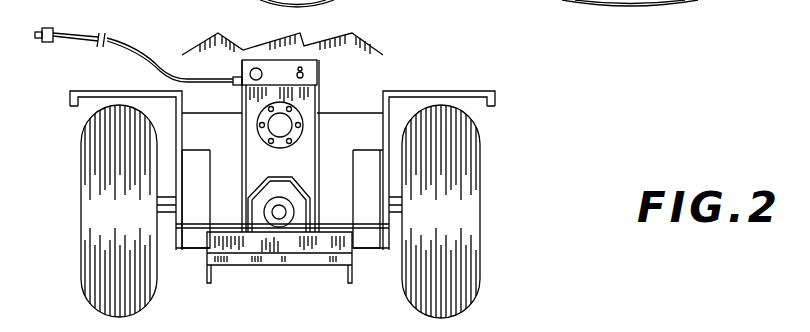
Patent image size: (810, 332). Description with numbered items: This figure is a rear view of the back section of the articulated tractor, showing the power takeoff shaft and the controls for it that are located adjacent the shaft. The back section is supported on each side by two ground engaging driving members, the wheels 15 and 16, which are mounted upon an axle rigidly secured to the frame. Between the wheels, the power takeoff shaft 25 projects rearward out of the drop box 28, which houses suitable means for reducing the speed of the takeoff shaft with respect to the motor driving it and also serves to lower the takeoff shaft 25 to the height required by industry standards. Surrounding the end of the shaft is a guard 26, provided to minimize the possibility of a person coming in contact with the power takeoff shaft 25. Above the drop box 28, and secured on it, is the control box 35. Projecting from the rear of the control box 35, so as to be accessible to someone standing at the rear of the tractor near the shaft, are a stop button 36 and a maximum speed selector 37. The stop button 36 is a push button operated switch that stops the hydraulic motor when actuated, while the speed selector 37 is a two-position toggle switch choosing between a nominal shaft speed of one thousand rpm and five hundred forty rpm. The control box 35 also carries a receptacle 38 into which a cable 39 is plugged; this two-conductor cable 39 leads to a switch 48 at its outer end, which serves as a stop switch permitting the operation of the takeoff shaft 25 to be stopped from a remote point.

The wheel 15 is at (81, 265).
The wheel 16 is at (481, 275).
The power takeoff shaft 25 is at (277, 220).
The guard 26 is at (275, 177).
The drop box 28 is at (320, 133).
The control box 35 is at (318, 82).
The stop button 36 is at (242, 70).
The maximum speed selector 37 is at (310, 72).
The receptacle 38 is at (240, 86).
The cable 39 is at (138, 48).
The switch 48 is at (42, 28).